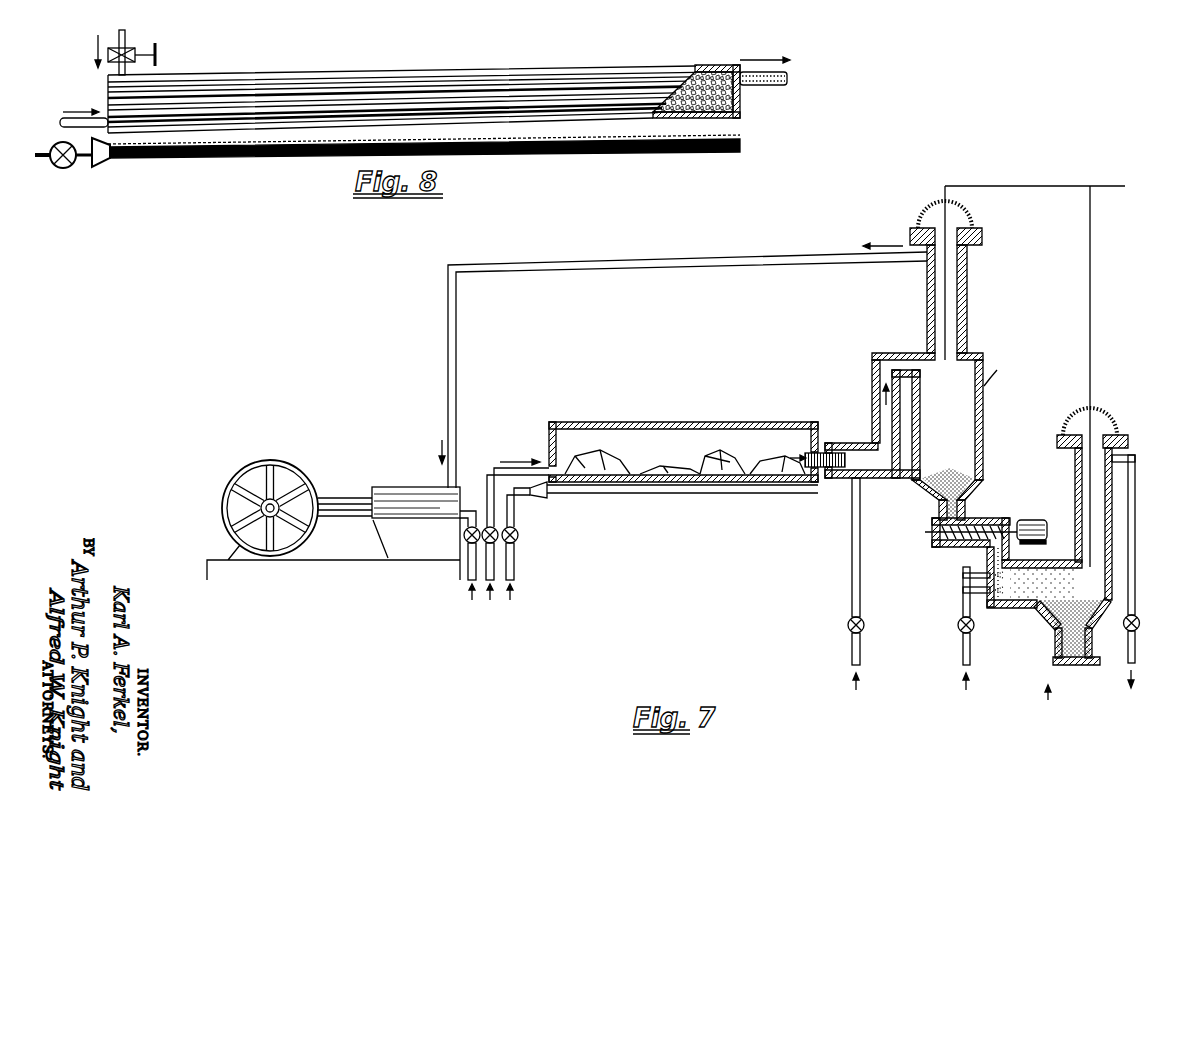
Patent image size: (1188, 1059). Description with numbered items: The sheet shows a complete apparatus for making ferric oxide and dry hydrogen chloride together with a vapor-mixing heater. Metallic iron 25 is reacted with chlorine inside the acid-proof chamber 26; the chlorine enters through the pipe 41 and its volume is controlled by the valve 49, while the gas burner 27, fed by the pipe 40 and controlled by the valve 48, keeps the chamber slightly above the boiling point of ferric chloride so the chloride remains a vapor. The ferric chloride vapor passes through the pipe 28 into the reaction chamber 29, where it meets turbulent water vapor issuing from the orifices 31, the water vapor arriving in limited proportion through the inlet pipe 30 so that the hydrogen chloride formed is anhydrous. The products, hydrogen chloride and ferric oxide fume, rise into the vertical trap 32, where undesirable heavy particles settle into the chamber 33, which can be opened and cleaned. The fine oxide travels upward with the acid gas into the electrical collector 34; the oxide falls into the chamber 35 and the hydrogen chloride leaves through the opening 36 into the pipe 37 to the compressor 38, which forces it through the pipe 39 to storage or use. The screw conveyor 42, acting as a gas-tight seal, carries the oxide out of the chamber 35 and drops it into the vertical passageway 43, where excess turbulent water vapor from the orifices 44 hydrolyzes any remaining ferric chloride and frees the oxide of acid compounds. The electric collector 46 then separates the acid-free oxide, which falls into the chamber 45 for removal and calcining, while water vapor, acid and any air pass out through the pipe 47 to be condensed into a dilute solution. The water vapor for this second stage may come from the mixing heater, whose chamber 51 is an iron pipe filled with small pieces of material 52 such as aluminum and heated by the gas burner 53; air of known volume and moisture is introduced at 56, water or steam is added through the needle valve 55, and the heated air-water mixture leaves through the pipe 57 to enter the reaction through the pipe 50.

In FIG. 7, the metallic iron 25 is at (603, 455).
In FIG. 7, the acid-proof chamber 26 is at (670, 422).
In FIG. 7, the gas burner 27 is at (700, 494).
In FIG. 7, the pipe 28 is at (778, 455).
In FIG. 7, the reaction chamber 29 is at (848, 440).
In FIG. 7, the inlet pipe 30 is at (860, 652).
In FIG. 7, the orifices 31 is at (856, 480).
In FIG. 7, the vertical trap 32 is at (878, 354).
In FIG. 7, the chamber 33 is at (902, 482).
In FIG. 7, the electrical collector 34 is at (948, 304).
In FIG. 7, the chamber 35 is at (962, 488).
In FIG. 7, the opening 36 is at (882, 352).
In FIG. 7, the pipe 37 is at (738, 263).
In FIG. 7, the compressor 38 is at (405, 490).
In FIG. 7, the pipe 39 is at (468, 575).
In FIG. 7, the pipe 40 is at (516, 575).
In FIG. 7, the pipe 41 is at (515, 550).
In FIG. 7, the screw conveyor 42 is at (988, 522).
In FIG. 7, the vertical passageway 43 is at (1046, 548).
In FIG. 7, the orifices 44 is at (980, 570).
In FIG. 7, the chamber 45 is at (1070, 645).
In FIG. 7, the electric collector 46 is at (1097, 460).
In FIG. 7, the pipe 47 is at (1137, 647).
In FIG. 7, the valve 48 is at (516, 535).
In FIG. 7, the valve 49 is at (488, 527).
In FIG. 7, the pipe 50 is at (970, 652).
In FIG. 8, the chamber 51 is at (745, 68).
In FIG. 8, the small pieces of material 52 is at (693, 64).
In FIG. 8, the gas burner 53 is at (742, 141).
In FIG. 8, the needle valve 55 is at (123, 28).
In FIG. 8, the air inlet 56 is at (60, 123).
In FIG. 8, the pipe 57 is at (789, 72).